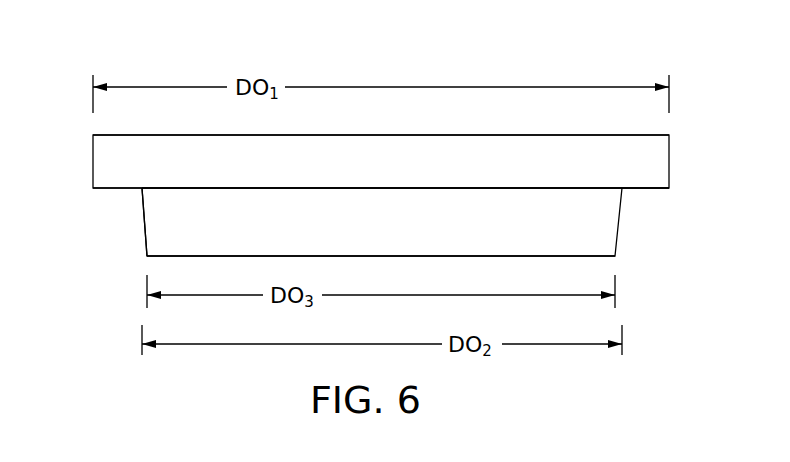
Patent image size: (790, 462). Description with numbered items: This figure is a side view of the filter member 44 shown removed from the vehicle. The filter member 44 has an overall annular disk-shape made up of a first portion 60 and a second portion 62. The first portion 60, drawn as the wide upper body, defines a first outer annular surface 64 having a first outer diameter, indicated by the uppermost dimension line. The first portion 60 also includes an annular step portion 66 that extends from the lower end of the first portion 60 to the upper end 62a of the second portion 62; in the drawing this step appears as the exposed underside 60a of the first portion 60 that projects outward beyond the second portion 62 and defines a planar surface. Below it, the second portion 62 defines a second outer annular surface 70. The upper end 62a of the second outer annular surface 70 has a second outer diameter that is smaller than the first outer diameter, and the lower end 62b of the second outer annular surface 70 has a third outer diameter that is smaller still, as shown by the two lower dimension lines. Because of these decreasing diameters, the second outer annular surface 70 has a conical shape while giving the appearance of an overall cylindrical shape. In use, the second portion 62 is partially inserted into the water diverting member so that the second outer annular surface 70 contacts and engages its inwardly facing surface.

The filter member 44 is at (544, 53).
The first portion 60 is at (669, 155).
The bottom surface of upper layer 60a is at (669, 181).
The second portion 62 is at (608, 233).
The upper end 62a is at (142, 196).
The lower end 62b is at (147, 254).
The first outer annular surface 64 is at (669, 138).
The annular step portion 66 is at (649, 189).
The second outer annular surface 70 is at (145, 229).